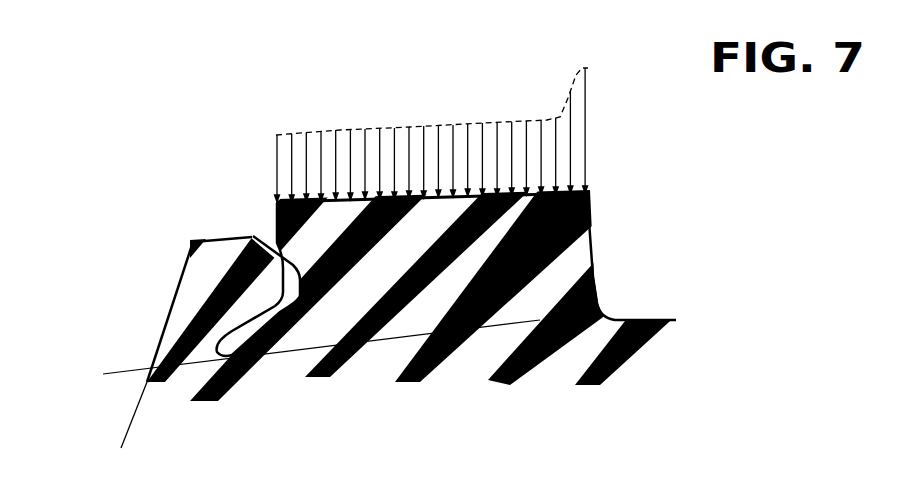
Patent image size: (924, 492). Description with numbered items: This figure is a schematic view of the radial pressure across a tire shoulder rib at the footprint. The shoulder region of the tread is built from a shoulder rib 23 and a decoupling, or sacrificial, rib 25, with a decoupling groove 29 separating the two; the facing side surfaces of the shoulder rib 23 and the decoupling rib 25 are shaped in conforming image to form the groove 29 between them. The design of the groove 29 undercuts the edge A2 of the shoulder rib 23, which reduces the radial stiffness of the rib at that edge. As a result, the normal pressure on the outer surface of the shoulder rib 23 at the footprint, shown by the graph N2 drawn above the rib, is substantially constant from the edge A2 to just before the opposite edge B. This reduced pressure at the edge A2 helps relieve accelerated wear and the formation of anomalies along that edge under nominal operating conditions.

The shoulder rib 23 is at (504, 247).
The decoupling rib 25 is at (200, 287).
The decoupling groove 29 is at (262, 233).
The graph of normal pressure N2 is at (417, 140).
The edge of shoulder rib A2 is at (273, 203).
The edge of shoulder rib B is at (590, 192).